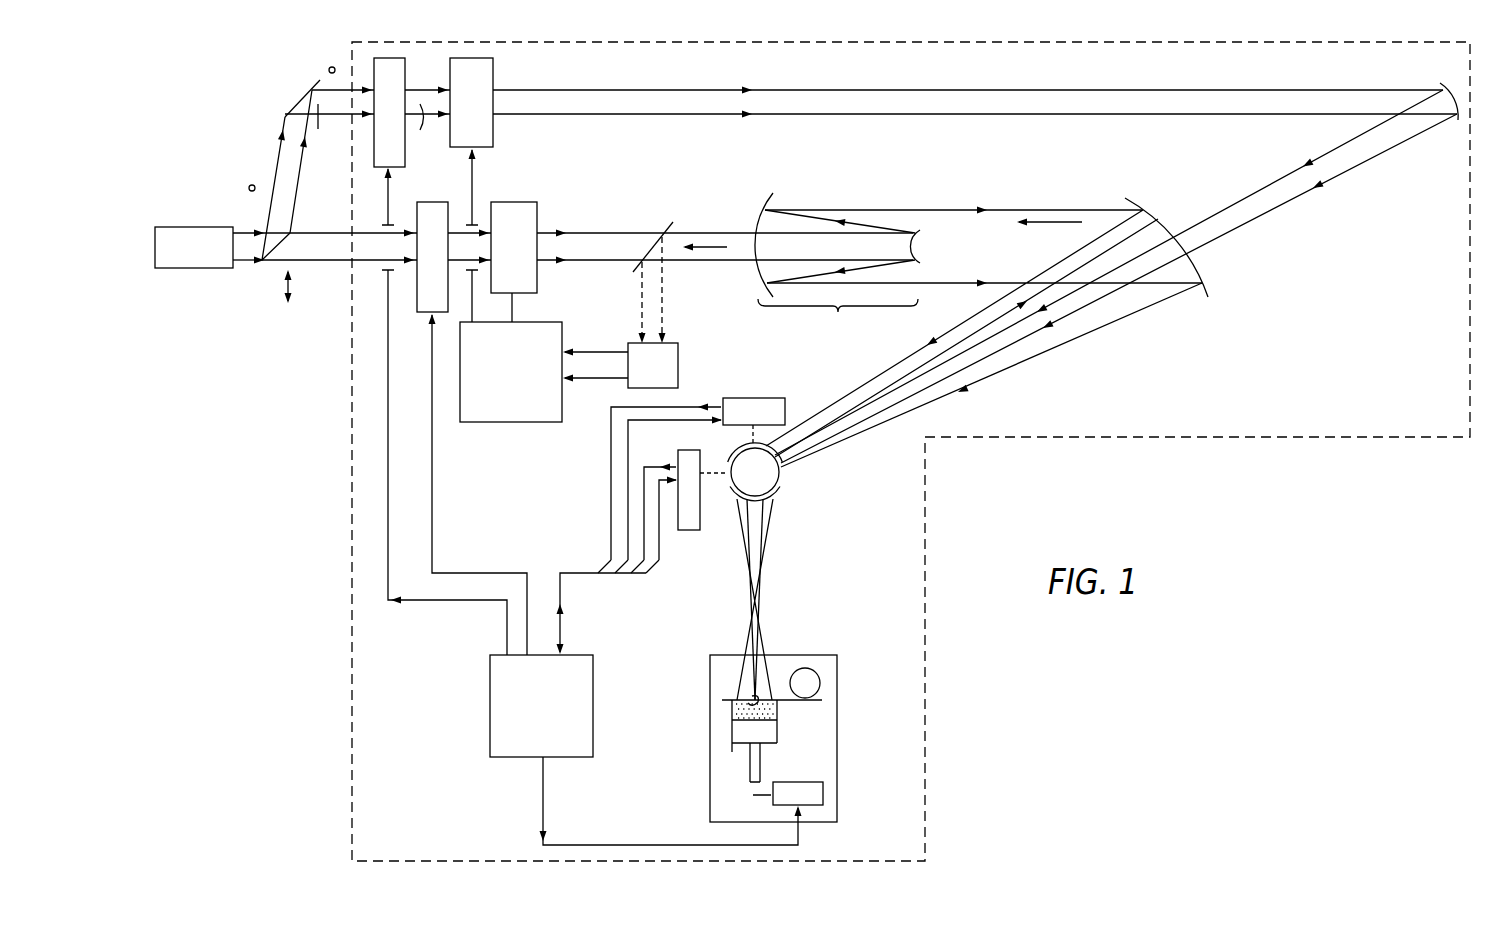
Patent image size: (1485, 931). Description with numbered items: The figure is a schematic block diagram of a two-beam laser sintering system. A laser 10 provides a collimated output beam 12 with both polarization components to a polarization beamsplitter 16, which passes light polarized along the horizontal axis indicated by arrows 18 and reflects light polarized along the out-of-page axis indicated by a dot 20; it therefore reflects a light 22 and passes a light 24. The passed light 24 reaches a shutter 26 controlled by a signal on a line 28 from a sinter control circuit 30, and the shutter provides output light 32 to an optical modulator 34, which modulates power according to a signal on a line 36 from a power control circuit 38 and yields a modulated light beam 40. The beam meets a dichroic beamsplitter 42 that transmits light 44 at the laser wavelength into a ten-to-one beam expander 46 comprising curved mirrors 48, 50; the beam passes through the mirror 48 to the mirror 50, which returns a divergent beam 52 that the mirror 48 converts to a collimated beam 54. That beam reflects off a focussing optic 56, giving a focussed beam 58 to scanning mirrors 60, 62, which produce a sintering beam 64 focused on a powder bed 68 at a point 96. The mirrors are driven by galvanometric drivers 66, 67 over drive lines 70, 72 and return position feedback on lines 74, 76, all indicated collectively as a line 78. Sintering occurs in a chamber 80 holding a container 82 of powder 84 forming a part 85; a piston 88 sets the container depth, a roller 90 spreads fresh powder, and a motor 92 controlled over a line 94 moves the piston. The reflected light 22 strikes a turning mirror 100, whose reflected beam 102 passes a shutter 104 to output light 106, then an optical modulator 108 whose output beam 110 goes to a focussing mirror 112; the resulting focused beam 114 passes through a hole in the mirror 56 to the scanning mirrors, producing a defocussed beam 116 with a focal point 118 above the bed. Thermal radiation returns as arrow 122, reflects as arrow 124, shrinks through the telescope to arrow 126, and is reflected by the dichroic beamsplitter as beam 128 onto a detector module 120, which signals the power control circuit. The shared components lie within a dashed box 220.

The laser 10 is at (180, 227).
The collimated output beam 12 is at (246, 233).
The polarization beamsplitter 16 is at (262, 263).
The horizontal polarization axis 18 is at (291, 300).
The perpendicular polarization axis 20 is at (330, 68).
The reflected light 22 is at (280, 164).
The passed light 24 is at (312, 247).
The shutter 26 is at (443, 202).
The shutter control line 28 is at (433, 517).
The sinter control circuit 30 is at (490, 700).
The shutter output light 32 is at (476, 232).
The optical modulator 34 is at (514, 202).
The modulator control line 36 is at (513, 308).
The power control circuit 38 is at (507, 424).
The modulated light beam 40 is at (592, 242).
The dichroic beamsplitter 42 is at (670, 222).
The transmitted light 44 is at (722, 240).
The beam expander 46 is at (838, 315).
The curved mirror 48 is at (768, 200).
The curved mirror 50 is at (927, 243).
The divergent beam 52 is at (785, 222).
The collimated beam 54 is at (958, 213).
The focussing optic 56 is at (1203, 268).
The focussed beam 58 is at (1038, 347).
The scanning mirror 60 is at (780, 485).
The scanning mirror 62 is at (742, 448).
The sintering beam 64 is at (763, 547).
The galvanometric driver 66 is at (690, 450).
The galvanometric driver 67 is at (748, 398).
The powder bed 68 is at (722, 699).
The drive signal line 70 is at (660, 548).
The drive signal line 72 is at (680, 413).
The position feedback line 74 is at (640, 527).
The position feedback line 76 is at (608, 495).
The collective line 78 is at (563, 590).
The chamber 80 is at (838, 735).
The container 82 is at (777, 733).
The powder 84 is at (728, 712).
The part 85 is at (778, 713).
The piston 88 is at (767, 738).
The roller 90 is at (820, 683).
The motor 92 is at (825, 785).
The motor control line 94 is at (643, 845).
The incidence point 96 is at (753, 698).
The turning mirror 100 is at (280, 122).
The reflected beam 102 is at (329, 122).
The shutter 104 is at (403, 76).
The shutter output light 106 is at (427, 123).
The optical modulator 108 is at (485, 63).
The modulator output beam 110 is at (590, 98).
The focussing mirror 112 is at (1441, 85).
The focused beam 114 is at (1358, 148).
The defocussed beam 116 is at (756, 523).
The focal point 118 is at (752, 563).
The optical detector module 120 is at (686, 352).
The reverse travelling radiation 122 is at (613, 380).
The reflected radiation 124 is at (590, 352).
The reduced radiation beam 126 is at (705, 249).
The reflected radiation beam 128 is at (653, 303).
The dashed box 220 is at (1074, 462).